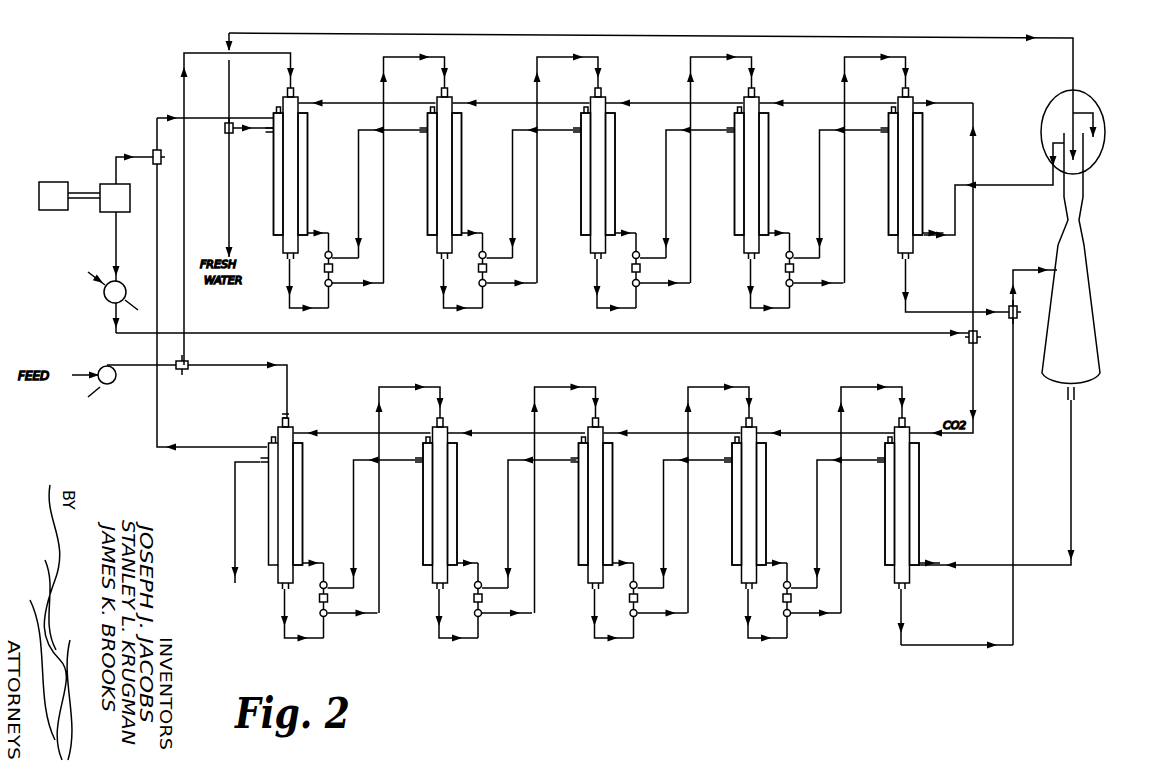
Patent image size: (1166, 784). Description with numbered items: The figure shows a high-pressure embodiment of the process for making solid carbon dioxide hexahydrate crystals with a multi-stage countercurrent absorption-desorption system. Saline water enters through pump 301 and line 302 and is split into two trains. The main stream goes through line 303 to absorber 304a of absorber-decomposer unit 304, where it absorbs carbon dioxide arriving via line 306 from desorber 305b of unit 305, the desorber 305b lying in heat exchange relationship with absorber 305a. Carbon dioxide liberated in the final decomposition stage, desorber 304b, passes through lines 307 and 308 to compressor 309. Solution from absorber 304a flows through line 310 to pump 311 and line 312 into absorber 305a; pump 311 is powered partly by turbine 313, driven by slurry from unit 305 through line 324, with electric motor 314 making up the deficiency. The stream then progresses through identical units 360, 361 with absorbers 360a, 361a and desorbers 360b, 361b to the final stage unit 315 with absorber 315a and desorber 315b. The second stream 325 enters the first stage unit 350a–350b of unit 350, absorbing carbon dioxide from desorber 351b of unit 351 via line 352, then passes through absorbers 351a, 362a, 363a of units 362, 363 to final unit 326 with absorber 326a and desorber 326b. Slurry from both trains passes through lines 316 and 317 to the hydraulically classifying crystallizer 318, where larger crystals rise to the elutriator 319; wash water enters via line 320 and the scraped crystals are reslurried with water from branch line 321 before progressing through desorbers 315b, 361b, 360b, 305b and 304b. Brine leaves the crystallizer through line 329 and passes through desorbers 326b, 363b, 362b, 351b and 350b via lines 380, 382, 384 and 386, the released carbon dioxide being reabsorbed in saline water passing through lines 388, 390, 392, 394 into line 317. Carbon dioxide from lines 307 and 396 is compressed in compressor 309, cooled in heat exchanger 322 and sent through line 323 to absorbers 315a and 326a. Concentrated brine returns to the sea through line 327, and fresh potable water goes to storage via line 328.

The pump 301 is at (112, 385).
The line 302 is at (141, 361).
The line 303 is at (186, 226).
The absorber-decomposer unit 304 is at (301, 151).
The absorber 304a is at (303, 169).
The desorber 304b is at (311, 129).
The absorber-decomposer unit 305 is at (452, 218).
The absorber 305a is at (455, 151).
The desorber 305b is at (460, 172).
The line 306 is at (332, 101).
The line 307 is at (221, 118).
The line 308 is at (143, 156).
The compressor 309 is at (104, 205).
The line 310 is at (291, 276).
The pump 311 is at (334, 285).
The line 312 is at (388, 219).
The turbine 313 is at (332, 254).
The electric motor 314 is at (336, 269).
The absorber-decomposer unit 315 is at (920, 145).
The absorber 315a is at (923, 164).
The desorber 315b is at (926, 180).
The line 316 is at (952, 306).
The line 317 is at (1018, 267).
The hydraulically classifying crystallizer 318 is at (1100, 357).
The elutriator 319 is at (1084, 148).
The line 320 is at (471, 32).
The branch line 321 is at (1019, 186).
The heat exchanger 322 is at (99, 272).
The line 323 is at (597, 351).
The line 324 is at (356, 207).
The second stream 325 is at (221, 364).
The absorber-decomposer unit 326 is at (920, 488).
The absorber 326a is at (926, 507).
The desorber 326b is at (929, 528).
The line 327 is at (231, 530).
The line 328 is at (228, 204).
The line 329 is at (1077, 476).
The absorber-desorber unit 350 is at (299, 509).
The absorber 350a is at (295, 424).
The desorber 350b is at (309, 471).
The absorber-decomposer unit 351 is at (452, 469).
The absorber 351a is at (454, 489).
The desorber 351b is at (459, 509).
The line 352 is at (360, 413).
The absorber-decomposer unit 360 is at (609, 161).
The absorber 360a is at (612, 193).
The desorber 360b is at (613, 212).
The absorber-decomposer unit 361 is at (762, 155).
The absorber 361a is at (766, 176).
The desorber 361b is at (771, 199).
The absorber-decomposer unit 362 is at (609, 471).
The absorber 362a is at (609, 494).
The desorber 362b is at (611, 517).
The absorber-decomposer unit 363 is at (763, 467).
The absorber 363a is at (764, 485).
The desorber 363b is at (767, 499).
The line 380 is at (809, 533).
The line 382 is at (685, 540).
The line 384 is at (533, 549).
The line 386 is at (379, 530).
The line 388 is at (285, 648).
The line 390 is at (447, 650).
The line 392 is at (602, 650).
The line 394 is at (759, 650).
The line 396 is at (221, 449).